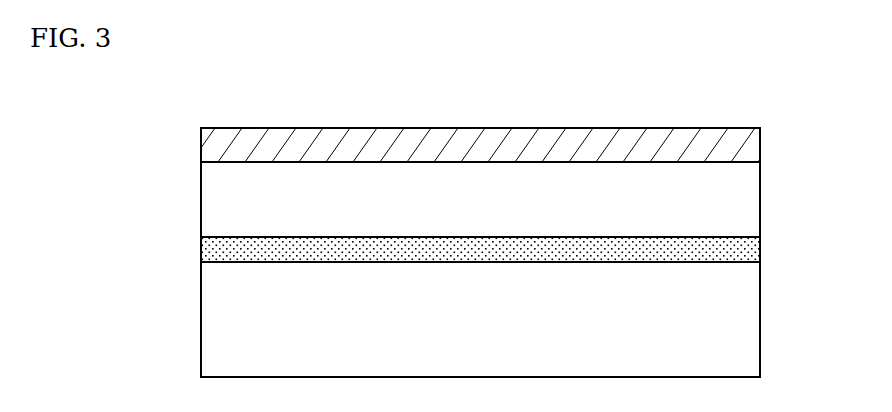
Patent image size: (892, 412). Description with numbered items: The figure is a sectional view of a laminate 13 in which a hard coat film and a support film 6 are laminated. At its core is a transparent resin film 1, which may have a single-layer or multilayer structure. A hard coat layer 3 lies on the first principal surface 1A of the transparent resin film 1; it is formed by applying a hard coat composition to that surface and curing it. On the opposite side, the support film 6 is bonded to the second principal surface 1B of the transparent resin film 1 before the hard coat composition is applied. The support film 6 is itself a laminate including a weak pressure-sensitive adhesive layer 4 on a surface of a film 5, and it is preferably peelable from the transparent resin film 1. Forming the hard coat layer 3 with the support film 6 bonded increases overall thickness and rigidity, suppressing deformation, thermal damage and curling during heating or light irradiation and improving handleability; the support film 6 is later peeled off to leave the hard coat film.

The laminate / display panel 13 is at (181, 143).
The hard coat layer 3 is at (752, 146).
The transparent resin film 1 is at (750, 207).
The first principal surface 1A is at (424, 166).
The second principal surface 1B is at (544, 234).
The weak pressure-sensitive adhesive layer 4 is at (754, 251).
The film 5 is at (507, 319).
The support film 6 is at (521, 307).